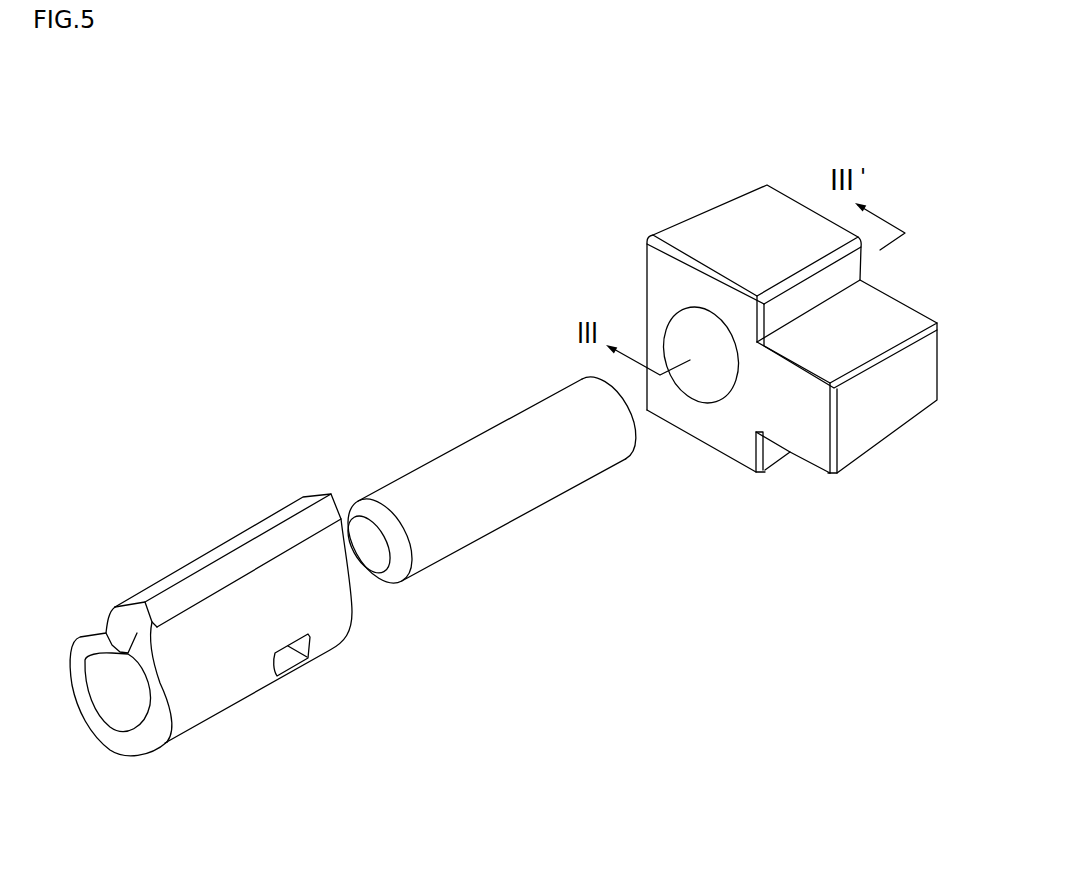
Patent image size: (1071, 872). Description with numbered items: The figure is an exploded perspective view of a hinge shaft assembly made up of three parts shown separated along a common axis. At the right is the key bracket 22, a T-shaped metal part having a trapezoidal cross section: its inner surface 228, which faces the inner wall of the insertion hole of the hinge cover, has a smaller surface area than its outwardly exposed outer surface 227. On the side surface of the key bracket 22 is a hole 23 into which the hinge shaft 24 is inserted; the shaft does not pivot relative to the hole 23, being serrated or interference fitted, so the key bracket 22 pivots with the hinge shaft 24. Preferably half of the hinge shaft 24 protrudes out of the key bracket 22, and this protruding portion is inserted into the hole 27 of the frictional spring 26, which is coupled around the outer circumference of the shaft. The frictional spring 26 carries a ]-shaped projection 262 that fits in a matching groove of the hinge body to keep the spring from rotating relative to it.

The key bracket 22 is at (765, 299).
The inner surface 228 is at (800, 198).
The hole 23 is at (677, 326).
The outer surface 227 is at (713, 427).
The hinge shaft 24 is at (485, 447).
The frictional spring 26 is at (211, 631).
The ]-shaped projection 262 is at (233, 553).
The hole 27 is at (122, 700).